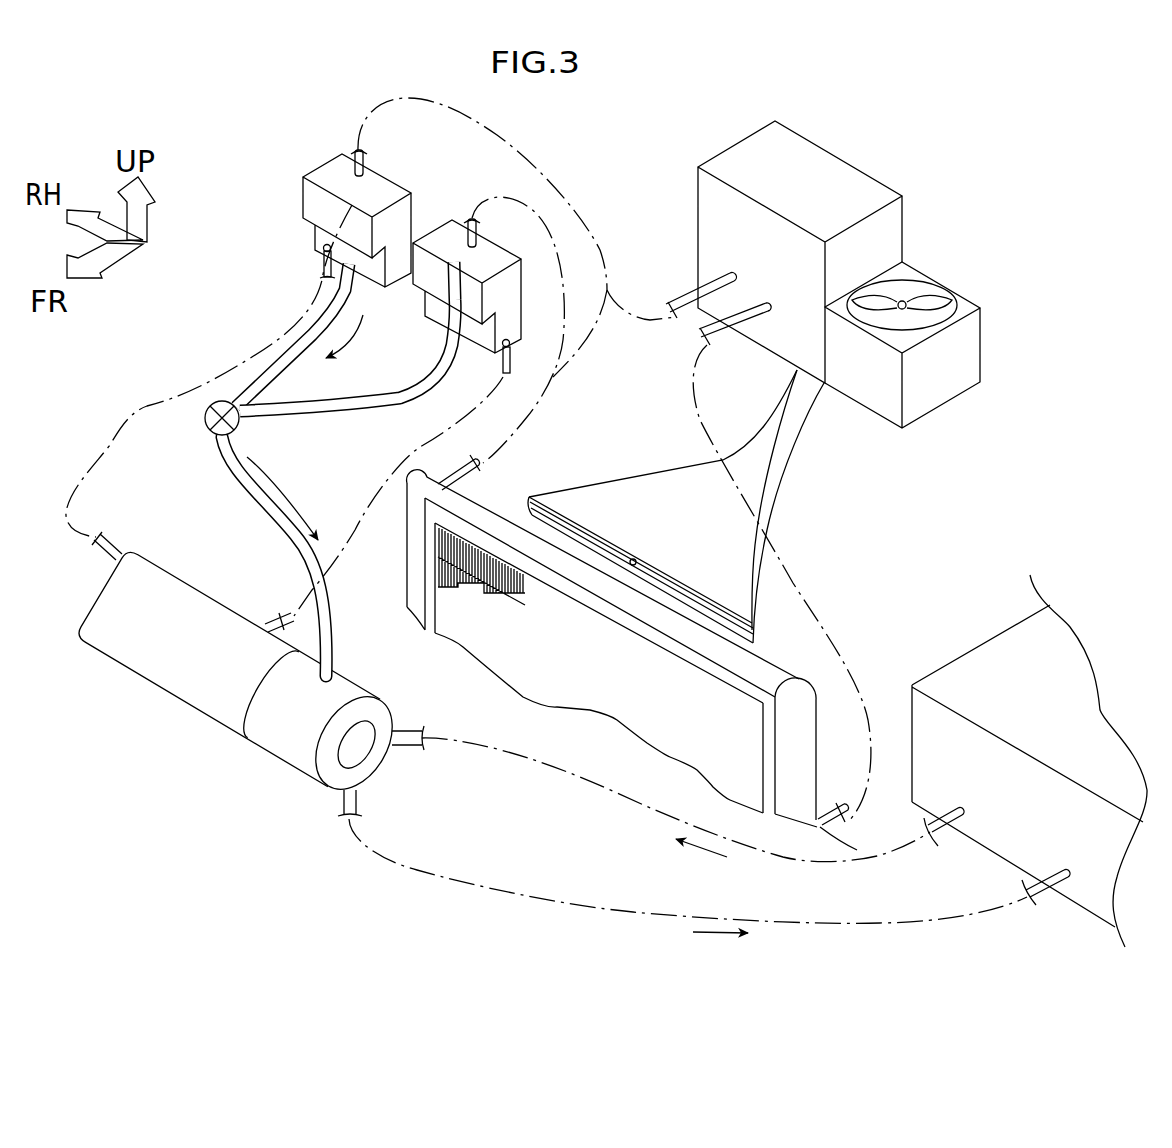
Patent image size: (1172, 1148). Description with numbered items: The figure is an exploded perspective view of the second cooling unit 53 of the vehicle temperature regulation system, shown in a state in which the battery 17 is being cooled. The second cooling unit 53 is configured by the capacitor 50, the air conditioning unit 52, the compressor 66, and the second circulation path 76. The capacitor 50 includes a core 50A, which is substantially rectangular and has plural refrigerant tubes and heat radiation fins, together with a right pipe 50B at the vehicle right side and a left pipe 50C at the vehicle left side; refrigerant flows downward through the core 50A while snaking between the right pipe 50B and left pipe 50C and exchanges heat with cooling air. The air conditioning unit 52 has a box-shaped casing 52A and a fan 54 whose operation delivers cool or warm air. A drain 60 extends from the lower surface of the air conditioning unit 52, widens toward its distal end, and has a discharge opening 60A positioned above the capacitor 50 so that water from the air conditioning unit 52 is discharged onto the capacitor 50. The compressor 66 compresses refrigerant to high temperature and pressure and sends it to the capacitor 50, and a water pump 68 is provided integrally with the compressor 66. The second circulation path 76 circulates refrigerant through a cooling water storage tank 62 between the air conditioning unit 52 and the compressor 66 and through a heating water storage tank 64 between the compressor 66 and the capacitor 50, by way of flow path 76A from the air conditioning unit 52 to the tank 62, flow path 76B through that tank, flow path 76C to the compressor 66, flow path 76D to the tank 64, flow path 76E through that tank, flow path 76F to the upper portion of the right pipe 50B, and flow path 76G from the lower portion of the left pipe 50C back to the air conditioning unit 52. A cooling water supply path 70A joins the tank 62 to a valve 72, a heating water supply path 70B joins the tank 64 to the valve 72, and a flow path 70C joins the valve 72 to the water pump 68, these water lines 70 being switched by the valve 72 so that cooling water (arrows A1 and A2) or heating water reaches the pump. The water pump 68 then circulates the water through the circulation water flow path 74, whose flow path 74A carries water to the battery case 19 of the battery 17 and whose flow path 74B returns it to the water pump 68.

The battery case 19 is at (1029, 738).
The battery 17 is at (990, 633).
The capacitor 50 is at (668, 660).
The core 50A is at (592, 678).
The right pipe 50B is at (404, 575).
The left pipe 50C is at (818, 766).
The air conditioning unit 52 is at (873, 247).
The casing 52A is at (810, 137).
The second cooling unit 53 is at (551, 614).
The fan 54 is at (940, 300).
The drain 60 is at (711, 506).
The discharge opening 60A is at (633, 559).
The cooling water storage tank 62 is at (346, 160).
The heating water storage tank 64 is at (438, 232).
The compressor 66 is at (162, 690).
The water pump 68 is at (280, 768).
The coolant pipe 70 is at (277, 469).
The cooling water supply path 70A is at (245, 388).
The heating water supply path 70B is at (343, 412).
The flow path 70C is at (258, 514).
The valve 72 is at (207, 404).
The circulation water flow path 74 is at (672, 852).
The flow path 74A is at (470, 889).
The flow path 74B is at (537, 758).
The second circulation path 76 is at (468, 456).
The flow path 76A is at (688, 292).
The flow path 76B is at (343, 223).
The flow path 76C is at (322, 252).
The flow path 76D is at (276, 616).
The flow path 76E is at (560, 340).
The flow path 76F is at (485, 482).
The flow path 76G is at (750, 323).
The arrow A1 is at (352, 338).
The arrow A2 is at (290, 503).